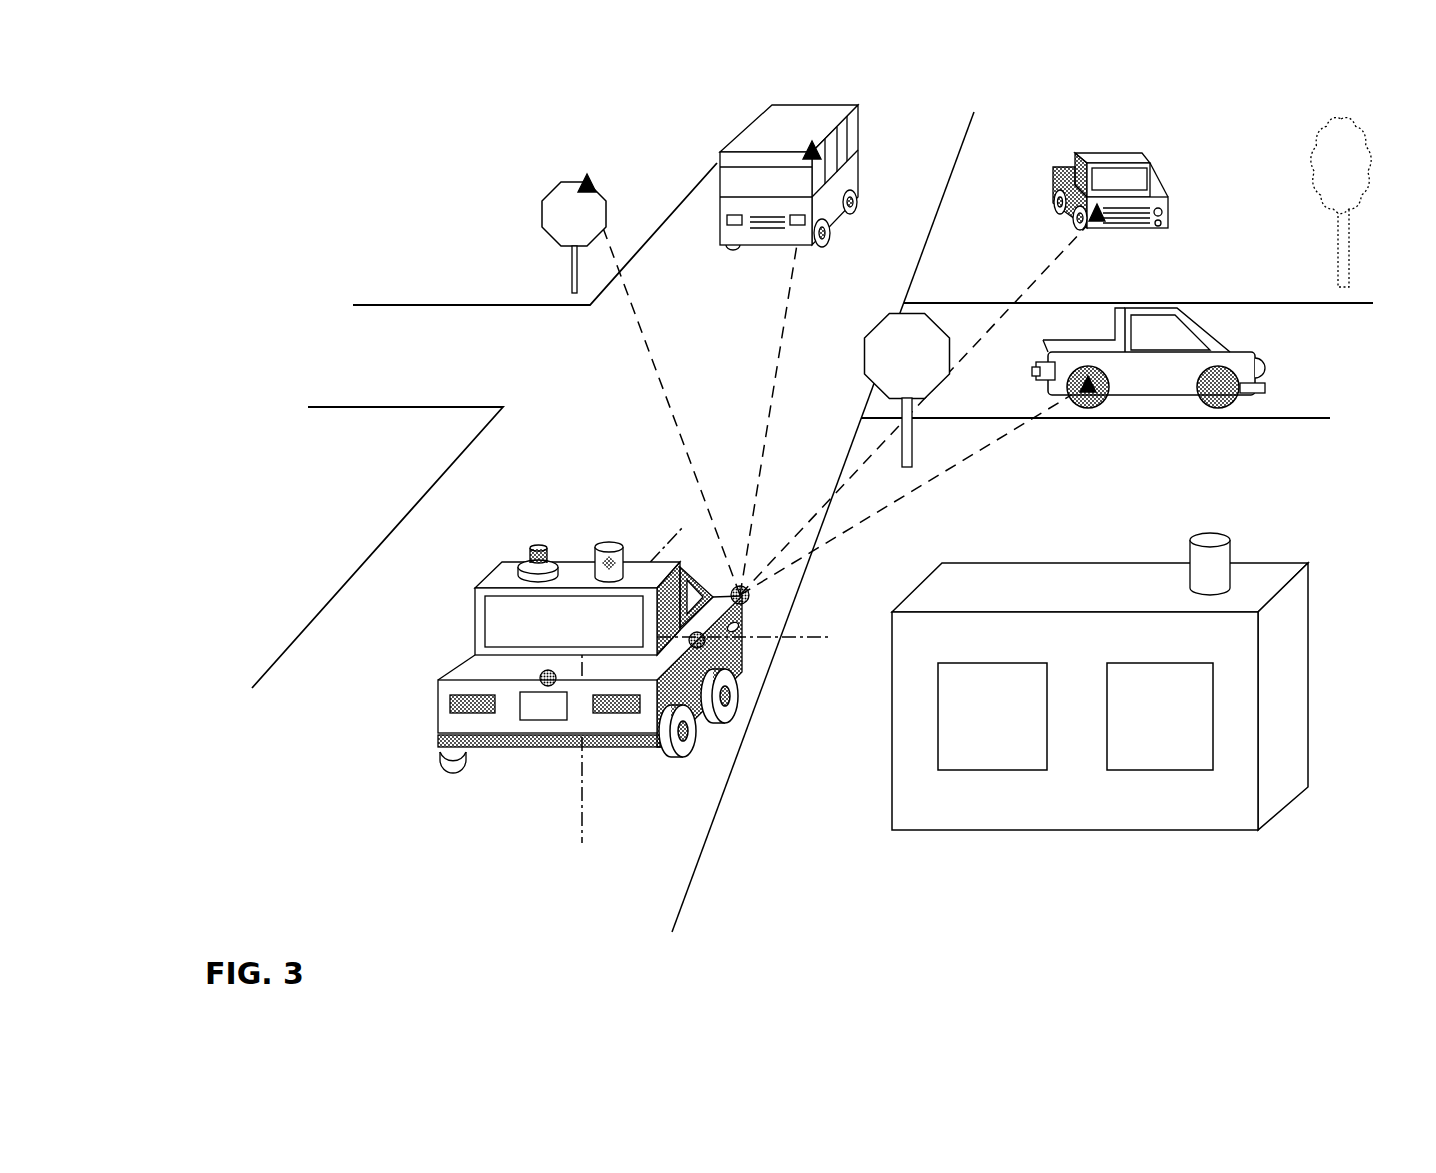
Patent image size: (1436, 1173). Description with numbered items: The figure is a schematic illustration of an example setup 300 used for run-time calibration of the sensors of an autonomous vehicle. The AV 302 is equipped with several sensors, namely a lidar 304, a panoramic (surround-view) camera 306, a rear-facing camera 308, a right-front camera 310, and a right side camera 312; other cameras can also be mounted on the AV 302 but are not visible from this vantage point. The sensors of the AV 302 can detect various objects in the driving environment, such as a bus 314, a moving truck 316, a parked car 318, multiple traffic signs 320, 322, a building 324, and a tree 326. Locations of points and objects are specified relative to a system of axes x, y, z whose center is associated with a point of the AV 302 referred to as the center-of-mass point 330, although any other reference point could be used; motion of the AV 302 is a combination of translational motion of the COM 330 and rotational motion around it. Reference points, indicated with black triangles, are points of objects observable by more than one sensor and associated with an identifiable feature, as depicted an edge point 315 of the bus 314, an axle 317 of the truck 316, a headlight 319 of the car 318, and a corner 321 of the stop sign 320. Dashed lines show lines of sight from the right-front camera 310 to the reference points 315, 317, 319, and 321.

The setup 300 is at (298, 112).
The AV 302 is at (664, 748).
The lidar 304 is at (526, 548).
The panoramic camera 306 is at (604, 541).
The rear-facing camera 308 is at (540, 684).
The right-front camera 310 is at (748, 592).
The right side camera 312 is at (705, 646).
The bus 314 is at (720, 210).
The edge point 315 is at (862, 137).
The moving truck 316 is at (1140, 378).
The axle 317 is at (1100, 410).
The parked car 318 is at (1175, 206).
The headlight 319 is at (1075, 230).
The traffic sign 320 is at (553, 226).
The corner 321 is at (585, 182).
The traffic sign 322 is at (920, 380).
The building 324 is at (1297, 797).
The tree 326 is at (1336, 272).
The center-of-mass point 330 is at (582, 635).